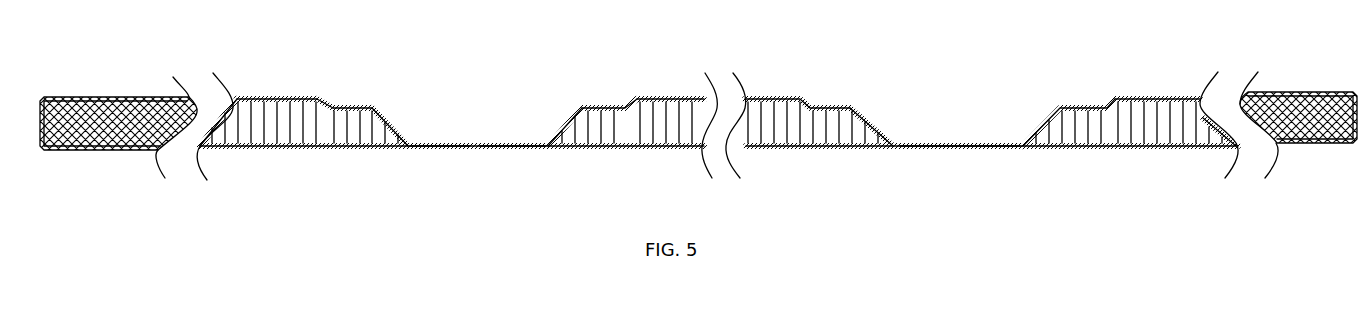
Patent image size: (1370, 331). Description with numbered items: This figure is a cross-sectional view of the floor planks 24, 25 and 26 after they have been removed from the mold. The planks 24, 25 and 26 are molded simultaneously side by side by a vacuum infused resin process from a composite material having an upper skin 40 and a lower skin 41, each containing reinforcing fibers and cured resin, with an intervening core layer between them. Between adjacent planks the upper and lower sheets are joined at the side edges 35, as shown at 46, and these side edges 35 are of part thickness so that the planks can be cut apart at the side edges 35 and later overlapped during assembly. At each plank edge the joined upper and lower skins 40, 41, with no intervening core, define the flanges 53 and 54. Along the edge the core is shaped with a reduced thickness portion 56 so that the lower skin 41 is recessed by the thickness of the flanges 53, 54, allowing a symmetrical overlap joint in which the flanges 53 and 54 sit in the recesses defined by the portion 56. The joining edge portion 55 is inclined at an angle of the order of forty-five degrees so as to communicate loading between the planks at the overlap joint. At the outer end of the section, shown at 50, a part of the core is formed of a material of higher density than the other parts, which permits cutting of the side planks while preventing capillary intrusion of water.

The plank 24 is at (580, 109).
The plank 25 is at (318, 99).
The plank 26 is at (1148, 92).
The side edge 35 is at (877, 108).
The upper skin 40 is at (618, 149).
The lower skin 41 is at (657, 98).
The joined upper and lower sheets at side edges 46 is at (963, 149).
The higher density core part 50 is at (118, 150).
The flange 53 is at (441, 149).
The flange 54 is at (511, 149).
The joining edge portion 55 is at (393, 122).
The reduced thickness portion 56 is at (350, 100).